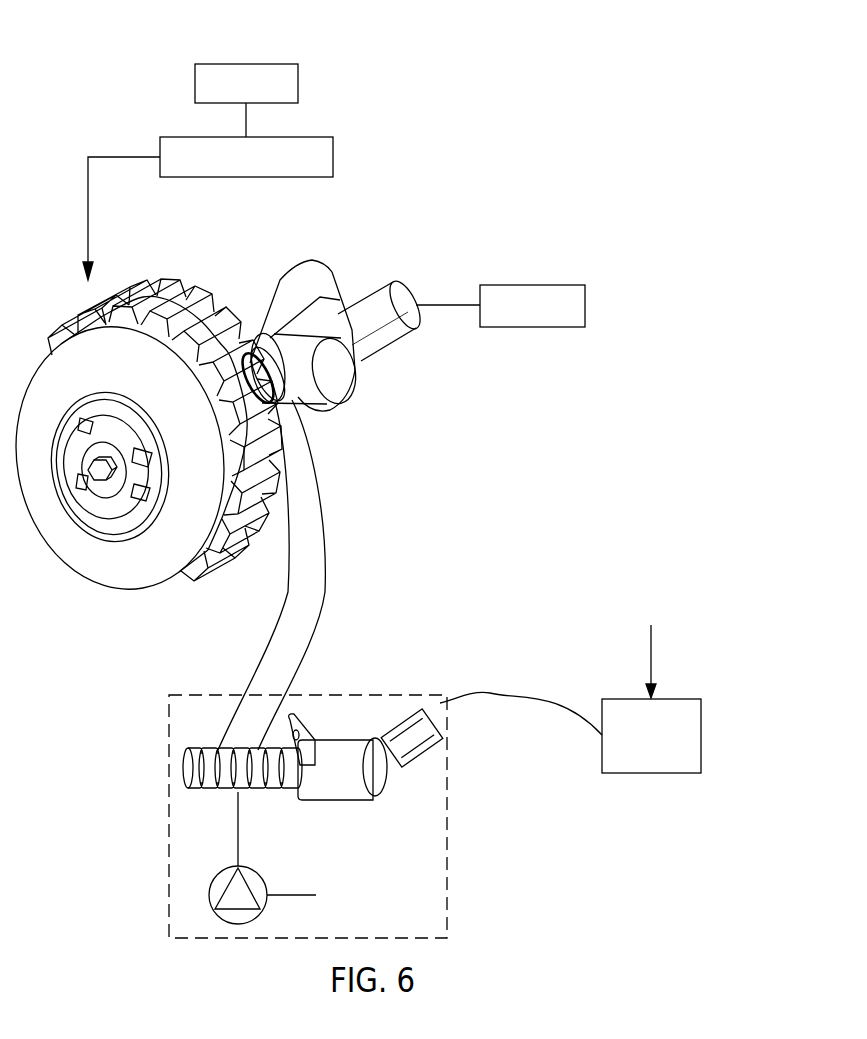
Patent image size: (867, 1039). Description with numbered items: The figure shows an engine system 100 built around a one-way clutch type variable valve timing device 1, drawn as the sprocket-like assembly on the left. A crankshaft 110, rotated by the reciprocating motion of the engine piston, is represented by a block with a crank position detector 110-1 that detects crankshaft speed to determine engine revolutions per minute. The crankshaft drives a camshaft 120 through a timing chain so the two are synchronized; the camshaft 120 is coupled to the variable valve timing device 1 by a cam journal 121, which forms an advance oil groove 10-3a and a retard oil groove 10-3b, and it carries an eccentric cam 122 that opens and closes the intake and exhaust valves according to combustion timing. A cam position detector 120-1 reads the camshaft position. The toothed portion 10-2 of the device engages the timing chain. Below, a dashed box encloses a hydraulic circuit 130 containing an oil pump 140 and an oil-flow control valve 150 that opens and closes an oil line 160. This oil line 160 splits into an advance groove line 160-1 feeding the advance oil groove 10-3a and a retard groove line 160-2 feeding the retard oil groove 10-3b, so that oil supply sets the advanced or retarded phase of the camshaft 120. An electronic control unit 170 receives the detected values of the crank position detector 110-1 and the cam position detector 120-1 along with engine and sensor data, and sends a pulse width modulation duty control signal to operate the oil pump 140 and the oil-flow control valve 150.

The variable valve timing device 1 is at (107, 527).
The sprocket teeth 10-2 is at (168, 304).
The advance oil groove 10-3a is at (247, 350).
The retard oil groove 10-3b is at (259, 350).
The engine system 100 is at (560, 147).
The crankshaft 110 is at (333, 155).
The crank position detector 110-1 is at (298, 83).
The camshaft 120 is at (385, 283).
The cam position detector 120-1 is at (530, 285).
The cam journal 121 is at (297, 345).
The eccentric cam 122 is at (320, 265).
The hydraulic circuit 130 is at (168, 815).
The oil pump 140 is at (210, 890).
The oil-flow control valve 150 is at (385, 782).
The oil line 160 is at (171, 575).
The advance groove line 160-1 is at (287, 626).
The retard groove line 160-2 is at (303, 668).
The electronic control unit (ECU) 170 is at (650, 773).